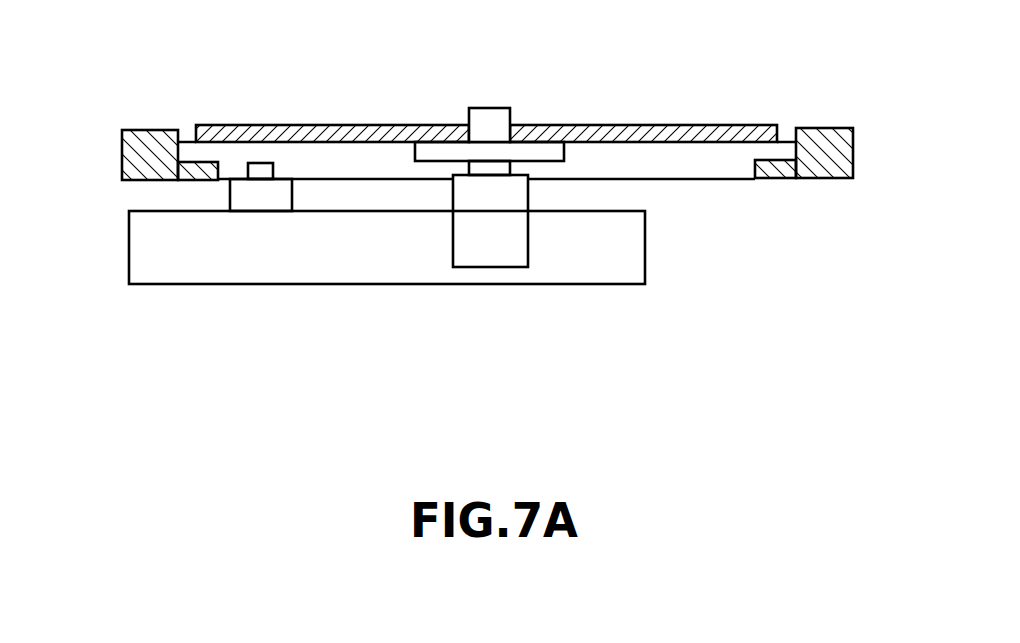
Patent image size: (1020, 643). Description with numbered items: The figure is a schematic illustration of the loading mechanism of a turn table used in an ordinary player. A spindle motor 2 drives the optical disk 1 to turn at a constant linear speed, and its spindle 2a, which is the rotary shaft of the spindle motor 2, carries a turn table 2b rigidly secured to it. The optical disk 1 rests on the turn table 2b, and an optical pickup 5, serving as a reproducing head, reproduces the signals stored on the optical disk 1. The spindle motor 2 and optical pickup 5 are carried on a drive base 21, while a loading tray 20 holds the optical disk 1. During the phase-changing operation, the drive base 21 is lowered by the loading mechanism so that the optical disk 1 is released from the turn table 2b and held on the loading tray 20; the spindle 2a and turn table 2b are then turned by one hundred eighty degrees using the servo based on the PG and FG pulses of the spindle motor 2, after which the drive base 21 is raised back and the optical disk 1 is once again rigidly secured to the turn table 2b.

The optical disk 1 is at (685, 123).
The spindle motor 2 is at (488, 245).
The spindle 2a is at (487, 108).
The turn table 2b is at (430, 152).
The optical pickup 5 is at (255, 195).
The loading tray 20 is at (677, 160).
The drive base 21 is at (310, 267).